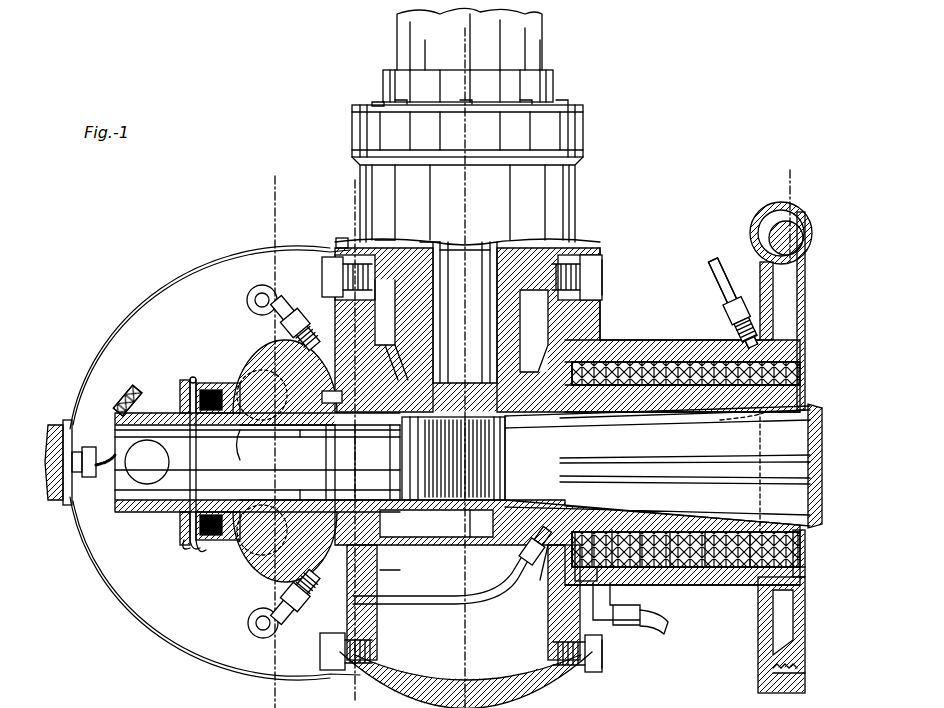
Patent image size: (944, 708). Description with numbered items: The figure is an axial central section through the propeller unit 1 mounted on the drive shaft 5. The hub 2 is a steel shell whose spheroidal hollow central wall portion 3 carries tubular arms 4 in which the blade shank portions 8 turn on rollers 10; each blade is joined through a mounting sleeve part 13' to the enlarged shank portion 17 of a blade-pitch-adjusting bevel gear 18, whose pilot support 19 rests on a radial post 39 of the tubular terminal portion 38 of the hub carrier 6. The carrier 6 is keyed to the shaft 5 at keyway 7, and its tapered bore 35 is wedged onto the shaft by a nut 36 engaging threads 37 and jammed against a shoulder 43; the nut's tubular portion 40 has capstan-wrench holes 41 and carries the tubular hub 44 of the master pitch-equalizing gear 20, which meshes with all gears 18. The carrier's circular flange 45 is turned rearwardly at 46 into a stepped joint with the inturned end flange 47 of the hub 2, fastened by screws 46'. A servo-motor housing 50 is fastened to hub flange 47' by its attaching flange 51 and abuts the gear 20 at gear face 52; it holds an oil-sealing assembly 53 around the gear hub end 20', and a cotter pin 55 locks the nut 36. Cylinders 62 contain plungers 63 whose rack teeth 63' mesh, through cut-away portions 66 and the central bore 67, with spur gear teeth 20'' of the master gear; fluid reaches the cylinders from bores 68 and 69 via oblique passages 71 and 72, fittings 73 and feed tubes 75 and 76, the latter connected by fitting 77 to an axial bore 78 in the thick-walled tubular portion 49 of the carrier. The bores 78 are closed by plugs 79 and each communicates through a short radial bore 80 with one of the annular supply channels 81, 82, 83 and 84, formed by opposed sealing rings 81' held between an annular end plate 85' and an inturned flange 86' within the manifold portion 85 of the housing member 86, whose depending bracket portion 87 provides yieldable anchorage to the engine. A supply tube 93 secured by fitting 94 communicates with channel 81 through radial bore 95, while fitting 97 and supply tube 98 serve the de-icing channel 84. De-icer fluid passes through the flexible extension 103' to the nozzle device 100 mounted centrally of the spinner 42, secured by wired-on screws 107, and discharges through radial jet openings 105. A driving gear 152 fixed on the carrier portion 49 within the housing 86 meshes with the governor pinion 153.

The drive unit 1 is at (599, 236).
The hub 2 is at (790, 170).
The central wall portion 3 is at (465, 28).
The tubular integral arms 4 is at (330, 178).
The drive shaft 5 is at (245, 176).
The hub carrier 6 is at (562, 330).
The keyway 7 is at (620, 470).
The shank portions 8 is at (397, 33).
The rollers 10 is at (810, 463).
The coupling collar 13' is at (484, 82).
The shank or hub portions 17 is at (425, 242).
The blade-pitch-adjusting bevel gears 18 is at (533, 331).
The pilot supports 19 is at (465, 356).
The master gear 20 is at (400, 454).
The outer end of gear hub 20' is at (284, 445).
The spur gear teeth 20'' is at (287, 480).
The tapered bore 35 is at (572, 418).
The nut 36 is at (445, 537).
The threads 37 is at (480, 450).
The tubular terminal portion 38 is at (475, 537).
The radial cylindrical posts 39 is at (452, 358).
The tubular portion of nut 40 is at (232, 498).
The capstan-wrench holes 41 is at (147, 462).
The spinner 42 is at (165, 296).
The shoulder 43 is at (525, 420).
The tubular hub 44 is at (335, 428).
The circular flange 45 is at (545, 600).
The rearwardly turned portion 46 is at (596, 470).
The screws 46' is at (609, 473).
The inturned end flange 47 is at (542, 610).
The flange 47' is at (372, 429).
The tubular portion of carrier 49 is at (682, 398).
The servo-motor housing 50 is at (185, 530).
The attaching flange 51 is at (330, 276).
The gear face 52 is at (380, 340).
The oil-sealing assembly 53 is at (212, 382).
The cotter pin 55 is at (190, 376).
The cylinders 62 is at (262, 350).
The pistons or plungers 63 is at (224, 440).
The rack teeth 63' is at (339, 462).
The cut-away portions 66 is at (300, 430).
The central bore 67 is at (355, 430).
The bore 68 is at (332, 394).
The bore 69 is at (390, 430).
The passage 71 is at (262, 312).
The passage 72 is at (316, 618).
The fittings 73 is at (290, 286).
The feed tube 75 is at (250, 290).
The feed tube 76 is at (420, 602).
The fitting 77 is at (520, 565).
The axially extending bores 78 is at (655, 512).
The plugs 79 is at (798, 532).
The radial bore 80 is at (616, 530).
The supply channel 81 is at (582, 523).
The sealing rings 81' is at (595, 523).
The supply channel 82 is at (670, 530).
The supply channel 83 is at (705, 530).
The supply channel 84 is at (750, 530).
The manifold portion 85 is at (682, 599).
The annular end plate 85' is at (522, 586).
The housing member 86 is at (688, 432).
The inturned flange 86' is at (810, 486).
The bracket portion 87 is at (760, 462).
The supply tube 93 is at (640, 630).
The fitting 94 is at (612, 630).
The radial bore 95 is at (593, 590).
The fitting 97 is at (725, 316).
The supply tube 98 is at (716, 288).
The distributor nozzle device 100 is at (60, 425).
The flexible extension 103' is at (122, 392).
The outlet jet openings 105 is at (82, 445).
The wired-on screws 107 is at (340, 244).
The driving gear 152 is at (775, 672).
The pinion 153 is at (768, 232).